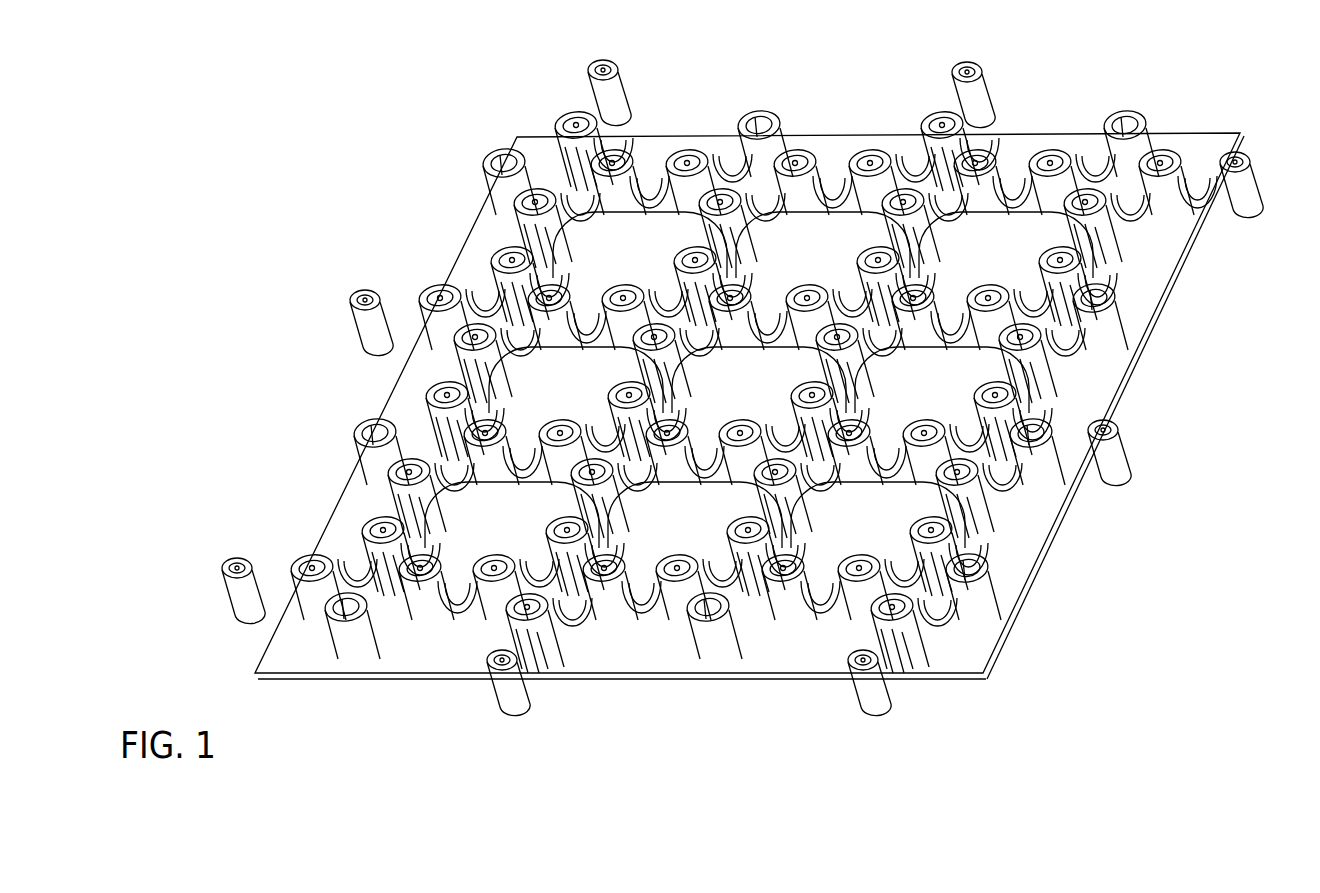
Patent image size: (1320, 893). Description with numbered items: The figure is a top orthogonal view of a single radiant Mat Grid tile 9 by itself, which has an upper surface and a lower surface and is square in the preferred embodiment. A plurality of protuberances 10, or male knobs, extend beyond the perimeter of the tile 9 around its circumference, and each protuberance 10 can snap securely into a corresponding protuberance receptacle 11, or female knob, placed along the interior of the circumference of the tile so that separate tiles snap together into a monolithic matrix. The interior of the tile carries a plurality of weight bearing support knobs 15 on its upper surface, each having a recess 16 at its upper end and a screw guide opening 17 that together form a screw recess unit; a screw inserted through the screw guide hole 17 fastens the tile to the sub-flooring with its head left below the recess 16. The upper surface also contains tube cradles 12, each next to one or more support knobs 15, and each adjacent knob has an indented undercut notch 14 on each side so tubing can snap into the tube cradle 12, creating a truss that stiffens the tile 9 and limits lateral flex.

The radiant Mat Grid tile 9 is at (1167, 297).
The protuberance 10 is at (232, 558).
The protuberance receptacle 11 is at (360, 427).
The tube cradle 12 is at (484, 297).
The indented undercut notch 14 is at (970, 527).
The weight bearing support knob 15 is at (562, 118).
The recess 16 is at (806, 155).
The screw guide opening 17 is at (695, 158).